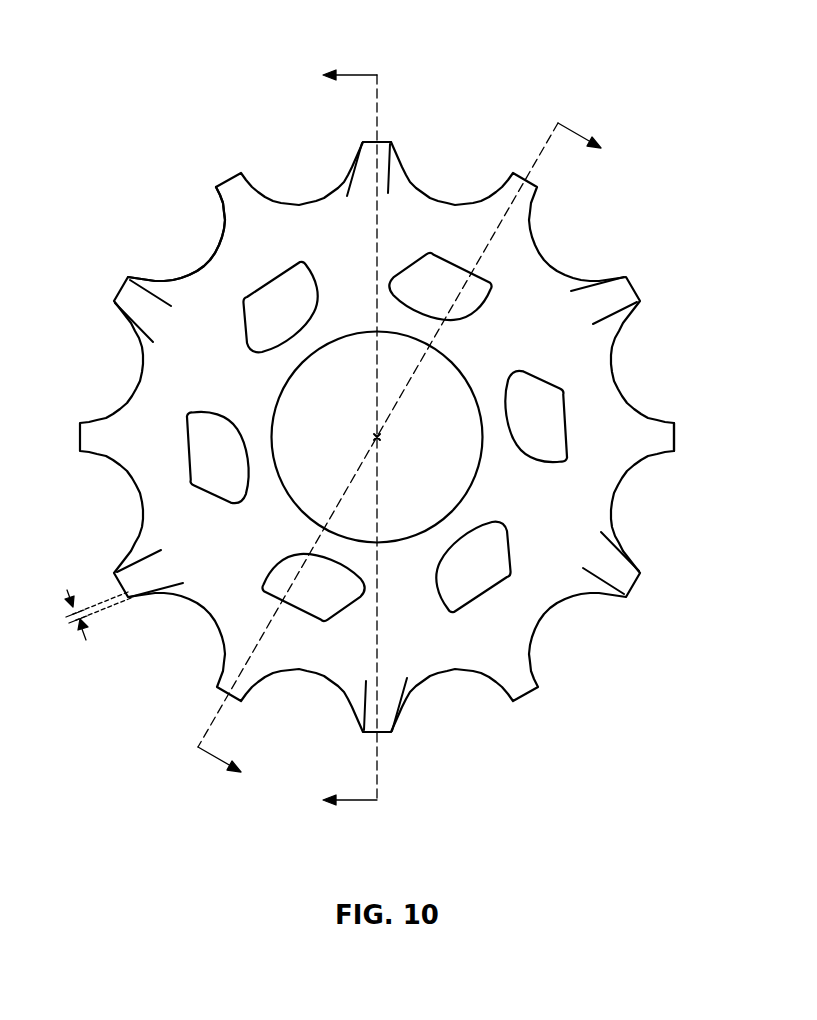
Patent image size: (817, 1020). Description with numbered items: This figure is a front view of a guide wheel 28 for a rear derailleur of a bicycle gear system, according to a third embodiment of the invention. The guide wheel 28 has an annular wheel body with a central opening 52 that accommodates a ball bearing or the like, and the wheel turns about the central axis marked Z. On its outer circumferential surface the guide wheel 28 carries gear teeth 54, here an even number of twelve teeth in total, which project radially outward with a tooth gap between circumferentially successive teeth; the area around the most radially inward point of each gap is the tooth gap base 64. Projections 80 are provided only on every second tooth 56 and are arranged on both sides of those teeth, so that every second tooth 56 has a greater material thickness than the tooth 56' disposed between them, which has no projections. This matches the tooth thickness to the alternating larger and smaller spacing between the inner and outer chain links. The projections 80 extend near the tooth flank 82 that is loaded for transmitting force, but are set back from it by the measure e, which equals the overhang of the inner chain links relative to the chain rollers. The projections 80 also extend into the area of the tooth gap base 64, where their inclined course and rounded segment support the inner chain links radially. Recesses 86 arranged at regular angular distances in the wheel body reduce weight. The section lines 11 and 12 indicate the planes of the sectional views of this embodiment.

The guide wheel 28 is at (442, 699).
The central opening 52 is at (483, 437).
The recesses 86 is at (212, 455).
The tooth 56 is at (630, 293).
The gear teeth 54 is at (639, 590).
The tooth 56' is at (700, 430).
The projections 80 is at (392, 145).
The tooth flank 82 is at (355, 159).
The tooth gap base 64 is at (207, 262).
The section line 12 is at (336, 439).
The section line 11 is at (419, 461).
The measure e is at (98, 629).
The axis Z is at (377, 437).